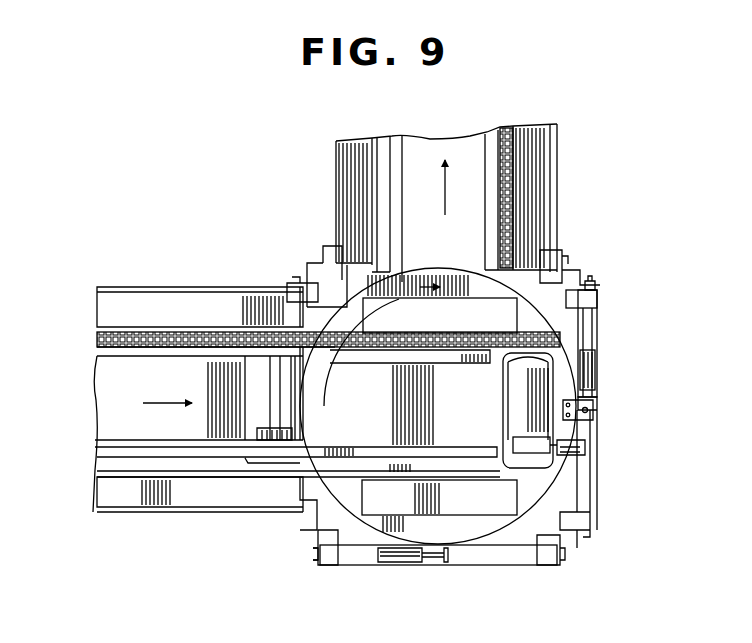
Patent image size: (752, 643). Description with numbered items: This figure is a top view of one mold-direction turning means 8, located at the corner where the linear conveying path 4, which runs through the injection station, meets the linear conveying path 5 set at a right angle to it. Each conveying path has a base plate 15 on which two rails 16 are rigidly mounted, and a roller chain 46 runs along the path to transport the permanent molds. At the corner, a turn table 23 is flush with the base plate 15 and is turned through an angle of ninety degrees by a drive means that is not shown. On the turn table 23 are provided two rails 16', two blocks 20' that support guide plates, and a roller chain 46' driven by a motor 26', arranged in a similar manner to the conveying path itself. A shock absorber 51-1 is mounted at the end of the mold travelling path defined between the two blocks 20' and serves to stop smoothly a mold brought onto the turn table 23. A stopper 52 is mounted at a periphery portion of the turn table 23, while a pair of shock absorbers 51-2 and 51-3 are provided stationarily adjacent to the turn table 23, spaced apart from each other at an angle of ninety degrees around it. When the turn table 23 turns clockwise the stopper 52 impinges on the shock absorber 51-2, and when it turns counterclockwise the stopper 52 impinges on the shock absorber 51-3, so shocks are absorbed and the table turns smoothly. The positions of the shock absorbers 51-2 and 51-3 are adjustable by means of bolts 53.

The linear conveying path 4 is at (166, 518).
The linear conveying path 5 is at (560, 141).
The mold-direction turning means 8 is at (600, 313).
The base plate 15 is at (442, 147).
The rails 16 is at (178, 465).
The rails 16' is at (401, 447).
The blocks 20' is at (439, 552).
The turn table 23 is at (540, 490).
The motor 26' is at (509, 410).
The roller chain 46 is at (343, 237).
The roller chain 46' is at (423, 335).
The shock absorber 51-1 is at (588, 467).
The shock absorber 51-2 is at (398, 568).
The shock absorber 51-3 is at (592, 357).
The stopper 52 is at (592, 414).
The bolts 53 is at (592, 276).